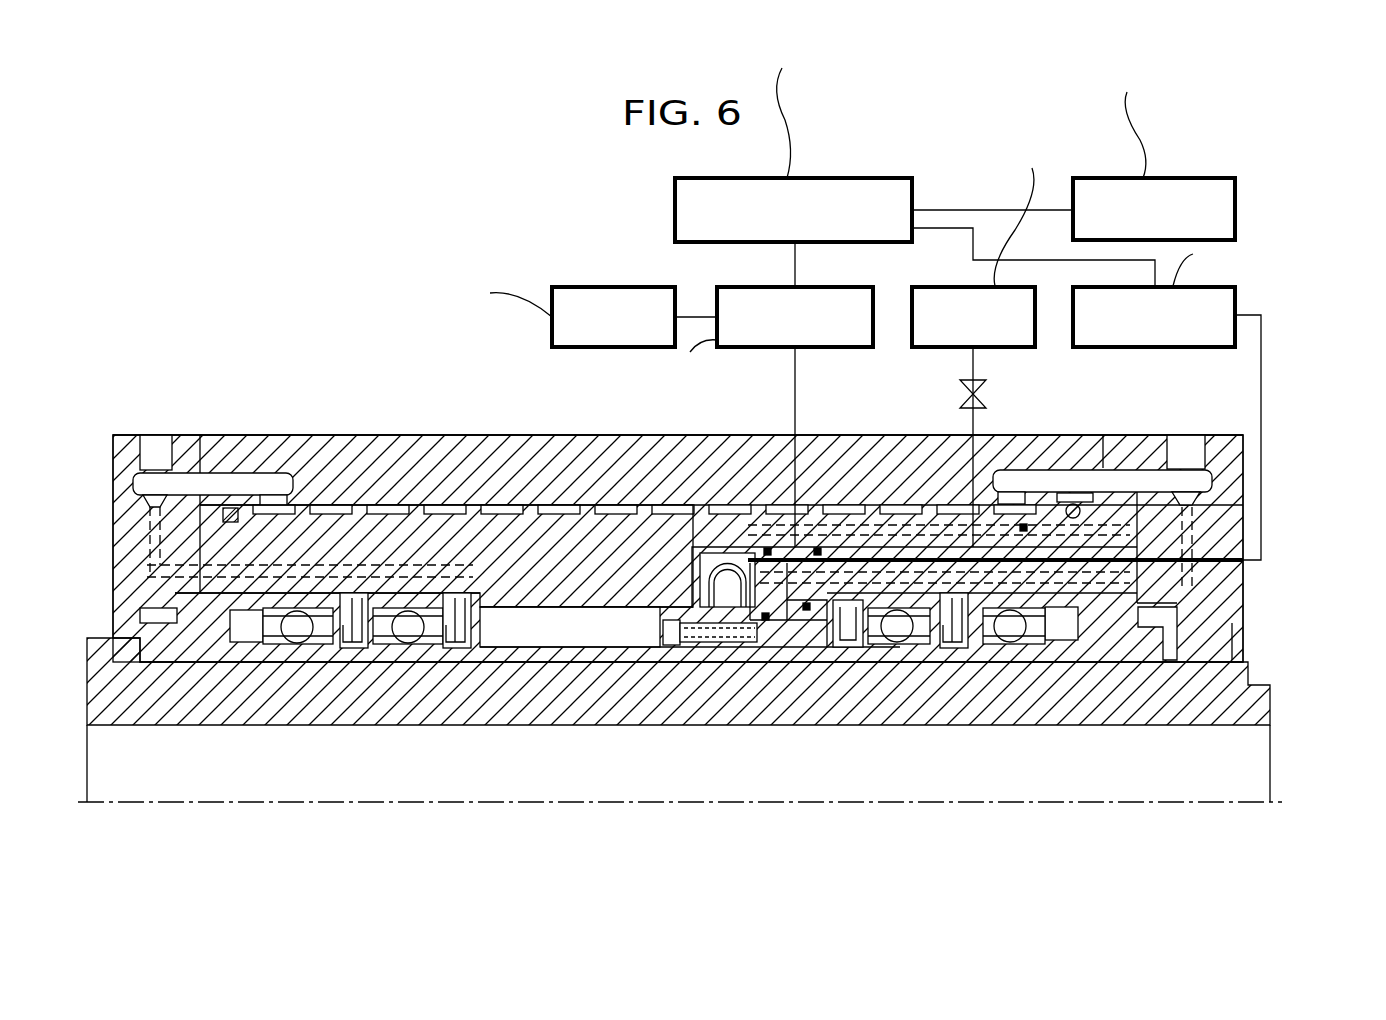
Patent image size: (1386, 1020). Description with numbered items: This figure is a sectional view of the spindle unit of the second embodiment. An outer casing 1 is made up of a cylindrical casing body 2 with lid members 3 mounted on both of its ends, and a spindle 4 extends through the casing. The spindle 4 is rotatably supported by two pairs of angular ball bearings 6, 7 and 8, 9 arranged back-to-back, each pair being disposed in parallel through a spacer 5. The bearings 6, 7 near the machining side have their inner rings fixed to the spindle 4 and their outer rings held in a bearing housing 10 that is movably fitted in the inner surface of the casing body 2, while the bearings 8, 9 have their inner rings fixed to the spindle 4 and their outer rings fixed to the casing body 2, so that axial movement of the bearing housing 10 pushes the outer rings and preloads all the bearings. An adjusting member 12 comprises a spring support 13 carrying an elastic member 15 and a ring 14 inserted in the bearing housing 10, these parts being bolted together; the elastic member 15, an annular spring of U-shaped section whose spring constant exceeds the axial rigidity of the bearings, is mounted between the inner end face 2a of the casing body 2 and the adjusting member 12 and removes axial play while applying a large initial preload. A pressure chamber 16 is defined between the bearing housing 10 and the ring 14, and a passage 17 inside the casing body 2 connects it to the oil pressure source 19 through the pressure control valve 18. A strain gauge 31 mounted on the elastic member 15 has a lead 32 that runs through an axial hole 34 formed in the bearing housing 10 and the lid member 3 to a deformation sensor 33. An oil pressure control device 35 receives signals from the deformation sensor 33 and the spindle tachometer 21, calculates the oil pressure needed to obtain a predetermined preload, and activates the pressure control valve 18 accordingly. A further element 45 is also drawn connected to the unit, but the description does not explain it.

The outer casing 1 is at (408, 434).
The casing body 2 is at (522, 545).
The inner end face 2a is at (690, 600).
The lid member 3 is at (678, 548).
The spindle 4 is at (467, 713).
The spacer 5 is at (358, 652).
The angular ball bearing 6 is at (297, 652).
The angular ball bearing 7 is at (405, 652).
The angular ball bearing 8 is at (897, 652).
The angular ball bearing 9 is at (1010, 652).
The bearing housing 10 is at (897, 548).
The adjusting member 12 is at (698, 648).
The spring support 13 is at (685, 605).
The ring 14 is at (762, 648).
The elastic member 15 is at (712, 550).
The pressure chamber 16 is at (800, 648).
The passage 17 is at (826, 548).
The pressure control valve 18 is at (733, 286).
The pressure source 19 is at (578, 286).
The spindle tachometer 21 is at (1095, 178).
The strain gauge 31 is at (735, 548).
The lead 32 is at (1262, 358).
The deformation sensor 33 is at (1130, 348).
The axial hole 34 is at (1246, 563).
The oil pressure control device 35 is at (842, 178).
The pressure source 45 is at (933, 286).